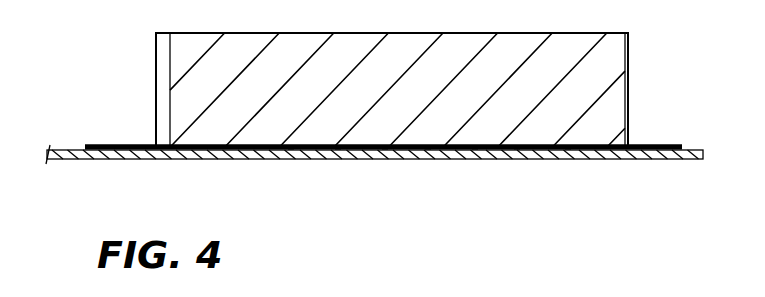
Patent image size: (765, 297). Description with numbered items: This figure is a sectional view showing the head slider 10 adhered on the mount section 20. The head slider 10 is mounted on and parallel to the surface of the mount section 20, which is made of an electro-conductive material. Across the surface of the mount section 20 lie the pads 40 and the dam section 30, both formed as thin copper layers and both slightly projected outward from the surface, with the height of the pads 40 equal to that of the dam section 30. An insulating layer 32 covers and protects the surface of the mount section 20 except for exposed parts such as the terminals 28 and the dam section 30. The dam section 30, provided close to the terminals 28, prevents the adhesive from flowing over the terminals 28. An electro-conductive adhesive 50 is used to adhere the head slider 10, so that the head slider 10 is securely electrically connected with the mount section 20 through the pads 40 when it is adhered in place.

The head slider 10 is at (420, 33).
The mount section 20 is at (428, 154).
The terminals 28 is at (109, 145).
The dam section 30 is at (208, 163).
The insulating layer 32 is at (68, 162).
The pads 40 is at (291, 160).
The electro-conductive adhesive 50 is at (338, 152).